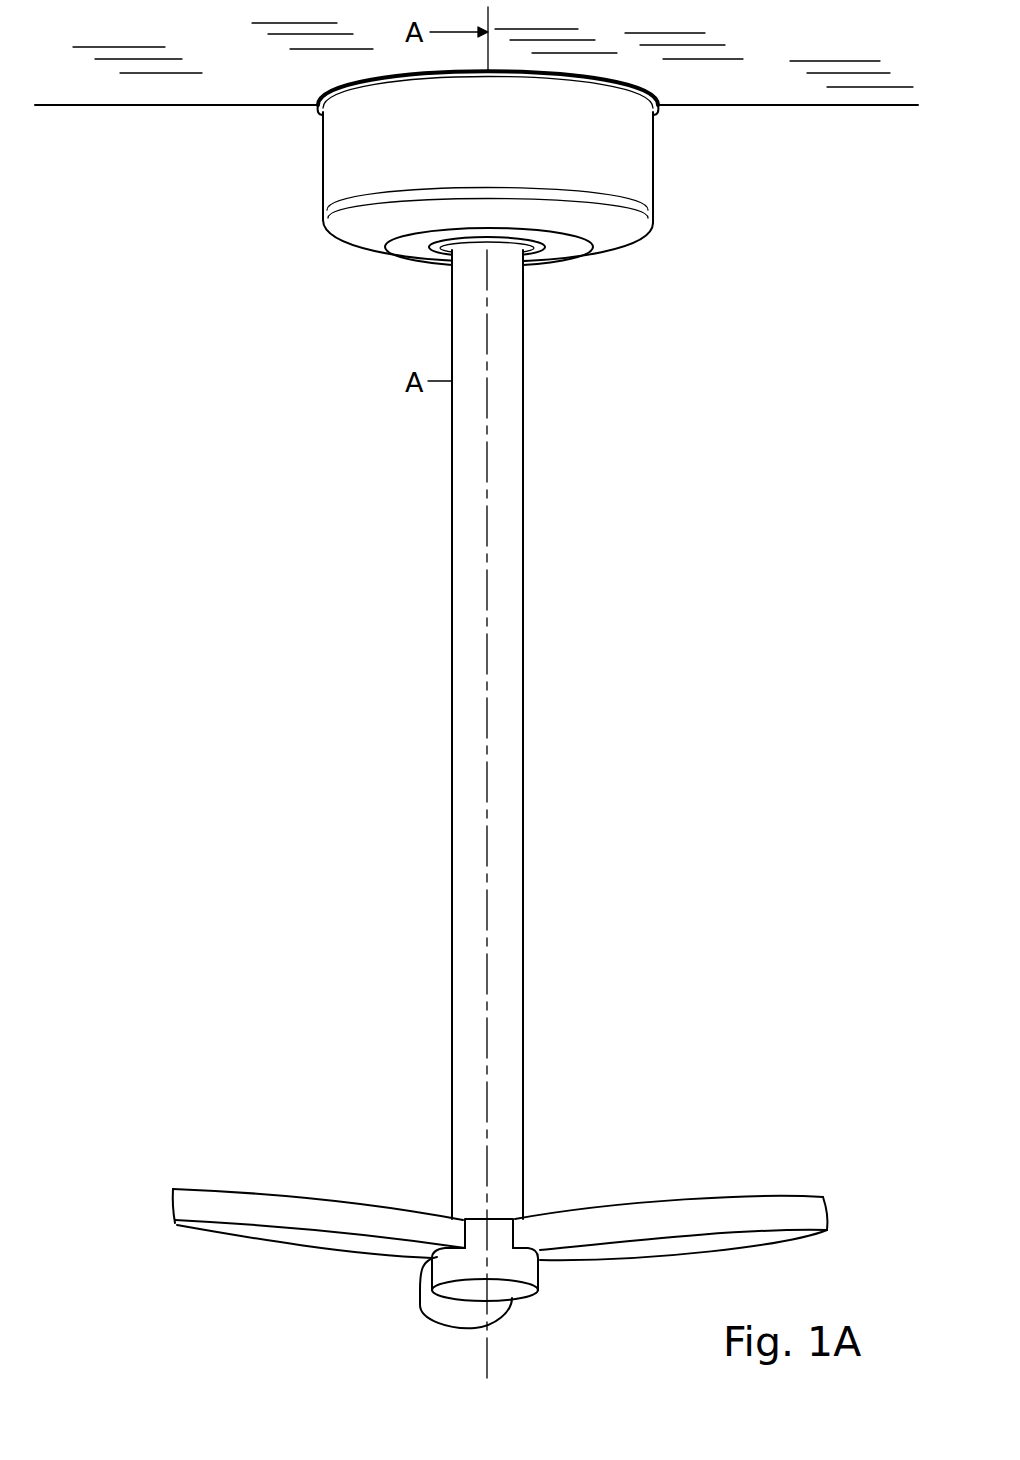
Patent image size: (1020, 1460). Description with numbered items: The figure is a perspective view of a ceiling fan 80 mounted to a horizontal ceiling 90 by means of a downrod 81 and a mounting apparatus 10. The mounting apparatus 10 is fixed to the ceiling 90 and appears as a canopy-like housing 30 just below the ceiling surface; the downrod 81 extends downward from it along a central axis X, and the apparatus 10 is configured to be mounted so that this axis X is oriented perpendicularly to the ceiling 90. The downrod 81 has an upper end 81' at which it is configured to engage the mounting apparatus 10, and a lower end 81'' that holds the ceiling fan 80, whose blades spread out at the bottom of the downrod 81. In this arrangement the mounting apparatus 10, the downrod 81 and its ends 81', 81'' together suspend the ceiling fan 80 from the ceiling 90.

The mounting apparatus 10 is at (278, 214).
The canopy / motor housing 30 is at (633, 168).
The ceiling fan 80 is at (190, 1208).
The downrod 81 is at (458, 735).
The upper end 81' is at (550, 266).
The lower end 81'' is at (525, 1193).
The ceiling 90 is at (764, 88).
The central axis X is at (487, 455).